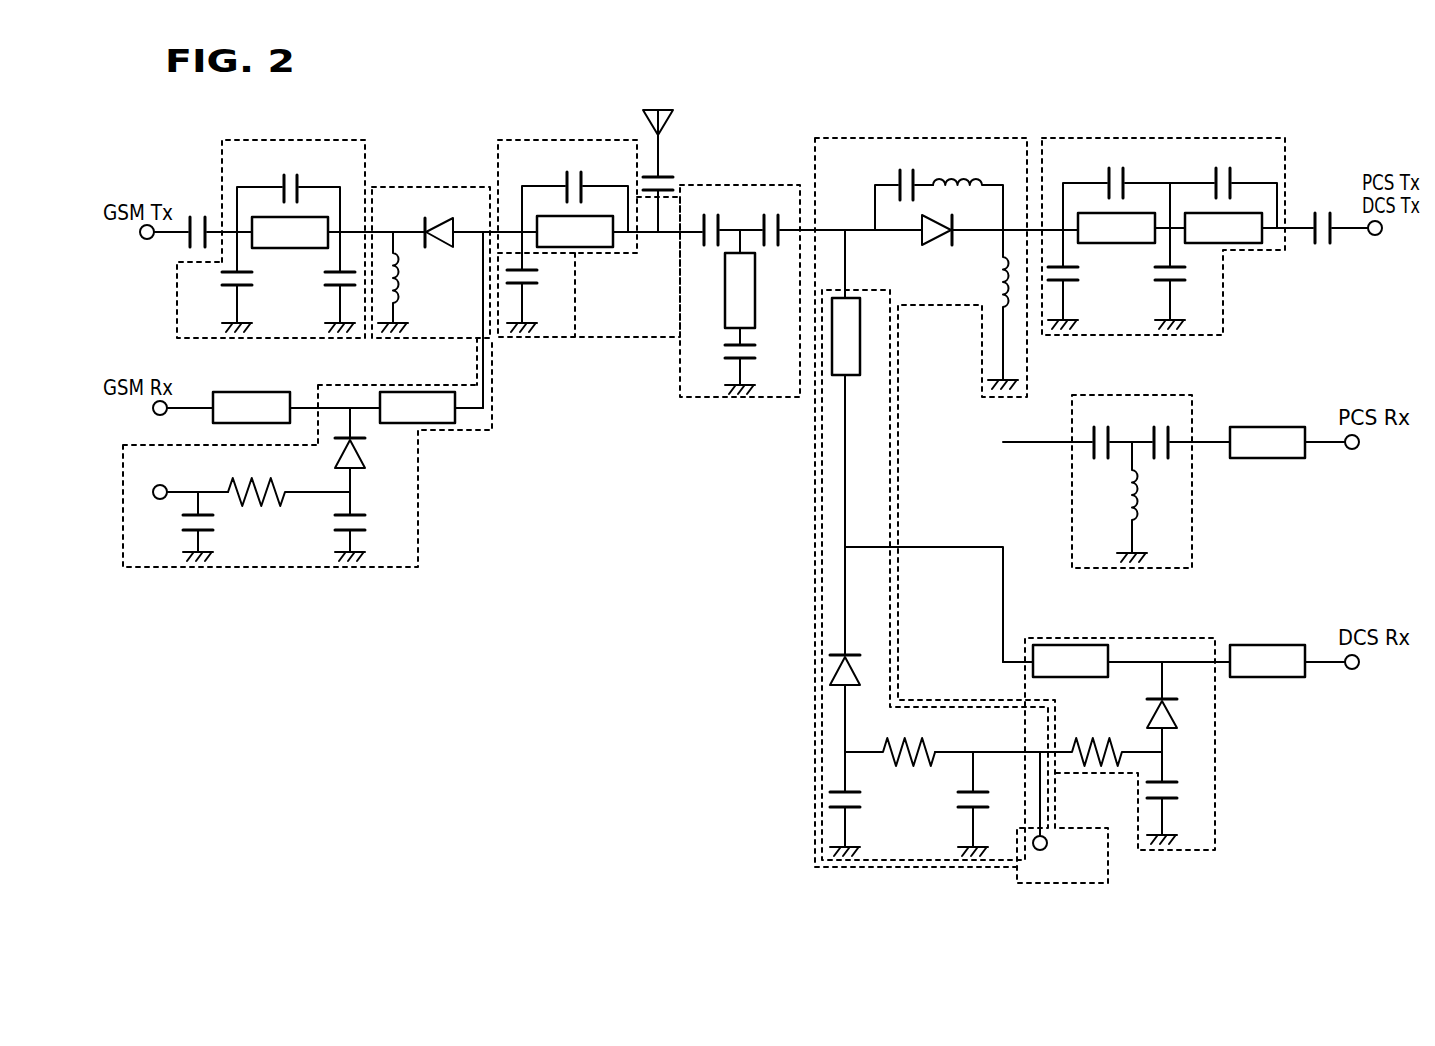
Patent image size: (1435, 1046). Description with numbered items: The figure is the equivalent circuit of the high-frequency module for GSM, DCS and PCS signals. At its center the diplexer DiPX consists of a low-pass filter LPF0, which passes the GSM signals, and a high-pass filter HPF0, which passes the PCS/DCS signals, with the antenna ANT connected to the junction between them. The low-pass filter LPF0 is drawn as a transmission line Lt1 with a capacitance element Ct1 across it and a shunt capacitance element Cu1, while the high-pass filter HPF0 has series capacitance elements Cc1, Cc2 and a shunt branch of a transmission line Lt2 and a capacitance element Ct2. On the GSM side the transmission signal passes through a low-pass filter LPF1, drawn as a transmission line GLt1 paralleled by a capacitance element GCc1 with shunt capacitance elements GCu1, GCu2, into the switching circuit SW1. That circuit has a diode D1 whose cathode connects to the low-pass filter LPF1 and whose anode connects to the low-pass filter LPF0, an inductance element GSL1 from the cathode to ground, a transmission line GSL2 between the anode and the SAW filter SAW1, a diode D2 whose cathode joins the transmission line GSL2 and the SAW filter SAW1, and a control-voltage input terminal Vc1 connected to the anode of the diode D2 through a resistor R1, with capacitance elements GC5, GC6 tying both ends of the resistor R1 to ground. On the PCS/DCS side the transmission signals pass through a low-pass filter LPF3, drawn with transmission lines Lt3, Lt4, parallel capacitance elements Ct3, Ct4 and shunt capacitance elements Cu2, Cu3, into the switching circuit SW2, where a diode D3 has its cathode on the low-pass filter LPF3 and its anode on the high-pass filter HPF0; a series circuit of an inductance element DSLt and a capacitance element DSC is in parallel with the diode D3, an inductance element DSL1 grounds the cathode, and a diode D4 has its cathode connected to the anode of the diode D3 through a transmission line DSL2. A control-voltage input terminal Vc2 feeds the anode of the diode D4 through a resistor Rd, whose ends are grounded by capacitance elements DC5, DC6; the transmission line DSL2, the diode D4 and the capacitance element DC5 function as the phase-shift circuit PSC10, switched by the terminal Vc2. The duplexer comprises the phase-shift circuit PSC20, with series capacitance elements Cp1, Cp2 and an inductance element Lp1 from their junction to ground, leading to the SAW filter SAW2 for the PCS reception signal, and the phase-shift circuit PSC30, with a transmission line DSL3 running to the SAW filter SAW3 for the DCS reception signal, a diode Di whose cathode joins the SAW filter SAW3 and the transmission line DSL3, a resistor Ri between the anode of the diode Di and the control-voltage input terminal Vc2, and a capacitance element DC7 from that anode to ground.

The low-pass filter LPF1 is at (342, 126).
The capacitor GCc1 is at (288, 189).
The transmission line GLt1 is at (290, 232).
The capacitor GCu1 is at (217, 282).
The capacitor GCu2 is at (321, 282).
The switching circuit SW1 is at (460, 171).
The diode D1 is at (439, 217).
The inductance element GSL1 is at (415, 282).
The low-pass filter LPF0 is at (585, 126).
The capacitor Ct1 is at (575, 187).
The transmission line Lt1 is at (575, 231).
The capacitor Cu1 is at (537, 282).
The antenna ANT is at (673, 156).
The high-pass filter HPF0 is at (760, 170).
The capacitor Cc1 is at (710, 216).
The capacitor Cc2 is at (770, 216).
The transmission line Lt2 is at (746, 287).
The capacitor Ct2 is at (759, 369).
The diplexer DiPX is at (627, 343).
The switching circuit SW2 is at (938, 125).
The capacitance element DSC is at (903, 186).
The inductance element DSLt is at (968, 186).
The diode D3 is at (937, 243).
The inductance element DSL1 is at (980, 309).
The transmission line DSL2 is at (853, 442).
The low-pass filter LPF3 is at (1188, 125).
The capacitor Ct3 is at (1116, 185).
The capacitor Ct4 is at (1223, 185).
The transmission line Lt3 is at (1116, 228).
The transmission line Lt4 is at (1223, 228).
The capacitor Cu2 is at (1079, 278).
The capacitor Cu3 is at (1186, 278).
The SAW filter SAW1 is at (251, 407).
The transmission line GSL2 is at (417, 407).
The diode D2 is at (362, 450).
The resistor R1 is at (289, 478).
The capacitance element GC6 is at (218, 526).
The capacitance element GC5 is at (370, 526).
The control-voltage input terminal Vc1 is at (182, 478).
The phase-shift circuit PSC20 is at (1150, 383).
The capacitance element Cp1 is at (1099, 428).
The capacitance element Cp2 is at (1161, 428).
The inductance element Lp1 is at (1151, 502).
The SAW filter SAW2 is at (1267, 442).
The phase-shift circuit PSC30 is at (1150, 623).
The transmission line DSL3 is at (1055, 661).
The SAW filter SAW3 is at (1267, 661).
The diode Di is at (1174, 722).
The resistor Ri is at (1048, 737).
The capacitance element DC7 is at (1177, 813).
The phase-shift circuit PSC10 is at (816, 708).
The diode D4 is at (858, 703).
The resistor Rd is at (890, 739).
The capacitance element DC5 is at (861, 804).
The capacitance element DC6 is at (988, 804).
The control-voltage input terminal Vc2 is at (1060, 812).